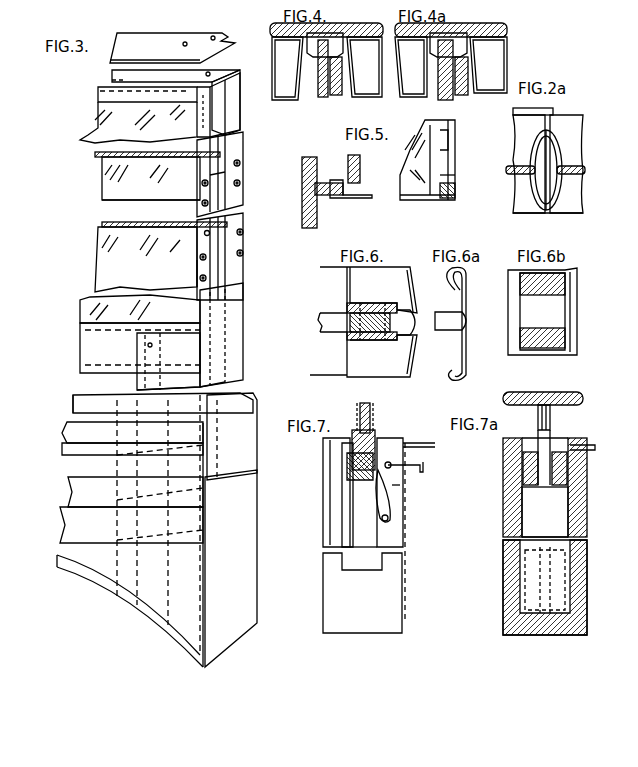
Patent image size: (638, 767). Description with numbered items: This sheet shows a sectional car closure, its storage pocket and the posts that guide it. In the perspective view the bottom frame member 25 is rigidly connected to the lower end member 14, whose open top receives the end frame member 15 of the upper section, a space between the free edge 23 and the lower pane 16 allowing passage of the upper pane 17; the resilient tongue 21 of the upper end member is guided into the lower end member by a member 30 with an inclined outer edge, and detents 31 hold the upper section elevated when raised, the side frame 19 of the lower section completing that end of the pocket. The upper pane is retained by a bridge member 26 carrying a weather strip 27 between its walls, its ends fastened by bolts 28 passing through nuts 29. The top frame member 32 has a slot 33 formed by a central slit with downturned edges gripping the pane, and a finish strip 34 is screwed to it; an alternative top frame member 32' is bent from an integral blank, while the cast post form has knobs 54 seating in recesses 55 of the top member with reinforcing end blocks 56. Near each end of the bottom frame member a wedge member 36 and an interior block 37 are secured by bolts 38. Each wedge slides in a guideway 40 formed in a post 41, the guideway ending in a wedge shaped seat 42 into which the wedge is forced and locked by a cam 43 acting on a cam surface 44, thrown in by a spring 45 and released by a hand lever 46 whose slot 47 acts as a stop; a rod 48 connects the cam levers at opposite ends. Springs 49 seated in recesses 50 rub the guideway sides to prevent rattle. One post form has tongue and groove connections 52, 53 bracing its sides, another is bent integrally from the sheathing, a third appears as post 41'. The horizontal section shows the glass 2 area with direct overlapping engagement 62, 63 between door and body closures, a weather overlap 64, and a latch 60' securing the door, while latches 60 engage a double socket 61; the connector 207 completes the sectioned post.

In FIG. 2A, the glass panel 2 is at (548, 222).
In FIG. 3, the lower end member 14 is at (197, 268).
In FIG. 6, the lower end member 14 is at (413, 288).
In FIG. 6A, the lower end member 14 is at (462, 300).
In FIG. 3, the end frame member 15 is at (157, 165).
In FIG. 5, the end frame member 15 is at (293, 155).
In FIG. 3, the lower pane 16 is at (161, 257).
In FIG. 5, the lower pane 16 is at (302, 191).
In FIG. 3, the upper pane 17 is at (151, 178).
In FIG. 5, the upper pane 17 is at (360, 169).
In FIG. 3, the side frame 19 is at (221, 335).
In FIG. 3, the resilient tongue 21 is at (160, 108).
In FIG. 5, the resilient tongue 21 is at (450, 122).
In FIG. 3, the free edge 23 is at (205, 234).
In FIG. 3, the bottom frame member 25 is at (140, 334).
In FIG. 6, the bottom frame member 25 is at (406, 322).
In FIG. 6A, the bottom frame member 25 is at (450, 321).
In FIG. 3, the bridge member 26 is at (155, 200).
In FIG. 5, the bridge member 26 is at (338, 198).
In FIG. 5, the weather strip 27 is at (328, 183).
In FIG. 5, the bolts 28 is at (448, 200).
In FIG. 5, the nuts 29 is at (455, 176).
In FIG. 5, the member with inclined outer edge 30 is at (448, 140).
In FIG. 3, the detents 31 is at (240, 182).
In FIG. 3, the top frame member 32 is at (176, 101).
In FIG. 4, the top frame member 32 is at (313, 66).
In FIG. 7A, the top frame member 32 is at (543, 407).
In FIG. 4A, the top frame member 32' is at (465, 60).
In FIG. 3, the slot 33 is at (112, 80).
In FIG. 3, the finish strip 34 is at (172, 48).
In FIG. 4, the finish strip 34 is at (280, 30).
In FIG. 3, the wedge member 36 is at (225, 382).
In FIG. 6, the wedge member 36 is at (350, 335).
In FIG. 6, the block 37 is at (352, 318).
In FIG. 7, the block 37 is at (372, 430).
In FIG. 3, the bolts 38 is at (153, 347).
In FIG. 6, the bolts 38 is at (362, 340).
In FIG. 7, the guideway 40 is at (347, 500).
In FIG. 3, the post 41 is at (156, 530).
In FIG. 4, the post 41 is at (345, 68).
In FIG. 4A, the post 41 is at (434, 70).
In FIG. 7, the post 41 is at (362, 593).
In FIG. 6B, the post 41' is at (543, 311).
In FIG. 3, the wedge shaped seat 42 is at (163, 403).
In FIG. 7, the wedge shaped seat 42 is at (336, 492).
In FIG. 7, the cam 43 is at (378, 525).
In FIG. 7, the cam surface 44 is at (368, 480).
In FIG. 7, the spring 45 is at (380, 505).
In FIG. 7, the hand lever 46 is at (400, 500).
In FIG. 7, the slot 47 is at (398, 505).
In FIG. 7, the rod 48 is at (390, 527).
In FIG. 7A, the springs 49 is at (560, 490).
In FIG. 7, the recesses 50 is at (348, 478).
In FIG. 7A, the recesses 50 is at (525, 553).
In FIG. 6A, the tongue and groove connection 52 is at (463, 378).
In FIG. 6A, the tongue and groove connection 53 is at (452, 378).
In FIG. 7A, the knobs 54 is at (552, 433).
In FIG. 7A, the recesses 55 is at (550, 408).
In FIG. 7A, the reinforcing end blocks 56 is at (575, 403).
In FIG. 7, the latches 60 is at (419, 432).
In FIG. 2A, the latch 60' is at (567, 164).
In FIG. 7, the double socket 61 is at (425, 470).
In FIG. 2A, the overlapping engagement 62 is at (538, 150).
In FIG. 2A, the overlapping engagement 63 is at (558, 150).
In FIG. 2A, the weather overlap 64 is at (553, 110).
In FIG. 2A, the connector 207 is at (560, 195).
In FIG. 6B, the connector 207 is at (552, 355).